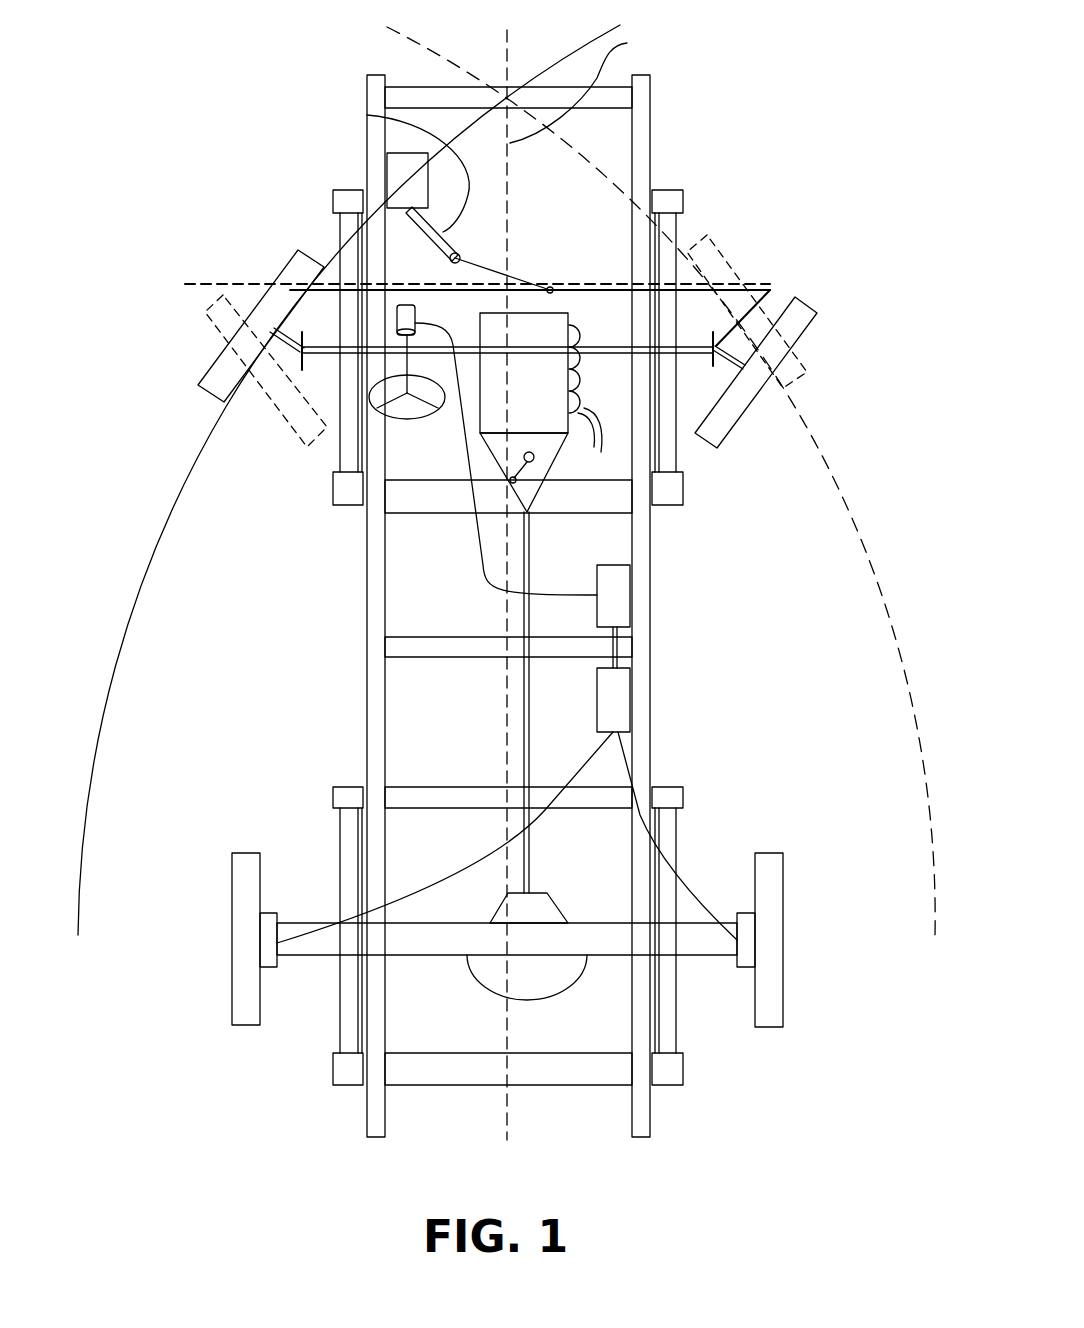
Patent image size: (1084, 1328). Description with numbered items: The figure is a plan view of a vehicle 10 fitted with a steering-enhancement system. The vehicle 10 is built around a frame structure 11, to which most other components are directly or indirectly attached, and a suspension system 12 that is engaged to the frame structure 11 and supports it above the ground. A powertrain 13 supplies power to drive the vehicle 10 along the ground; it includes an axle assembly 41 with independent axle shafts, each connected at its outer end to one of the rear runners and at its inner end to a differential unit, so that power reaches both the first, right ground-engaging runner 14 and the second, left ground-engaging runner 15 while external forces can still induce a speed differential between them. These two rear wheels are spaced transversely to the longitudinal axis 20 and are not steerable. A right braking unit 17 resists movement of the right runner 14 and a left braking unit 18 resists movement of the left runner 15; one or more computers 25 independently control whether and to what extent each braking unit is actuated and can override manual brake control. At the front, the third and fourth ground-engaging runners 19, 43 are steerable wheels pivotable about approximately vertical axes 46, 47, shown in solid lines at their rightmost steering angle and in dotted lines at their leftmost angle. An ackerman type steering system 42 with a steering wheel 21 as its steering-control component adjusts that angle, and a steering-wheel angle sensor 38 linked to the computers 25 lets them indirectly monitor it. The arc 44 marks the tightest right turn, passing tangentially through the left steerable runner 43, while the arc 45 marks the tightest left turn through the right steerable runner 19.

The vehicle 10 is at (270, 707).
The frame structure 11 is at (420, 507).
The suspension system 12 is at (347, 207).
The powertrain 13 is at (548, 424).
The first, right ground-engaging runner 14 is at (778, 877).
The second, left ground-engaging runner 15 is at (232, 937).
The right braking unit 17 is at (748, 915).
The left braking unit 18 is at (270, 968).
The third ground-engaging runner 19 is at (800, 318).
The longitudinal axis 20 is at (627, 43).
The steering-control component 21 is at (413, 422).
The computers 25 is at (622, 695).
The steering-wheel angle sensor 38 is at (397, 323).
The axle assembly 41 is at (427, 942).
The steering system 42 is at (398, 162).
The fourth ground-engaging runner 43 is at (282, 276).
The arc 44 is at (120, 640).
The arc 45 is at (828, 455).
The vertical axis 46 is at (712, 350).
The vertical axis 47 is at (305, 356).